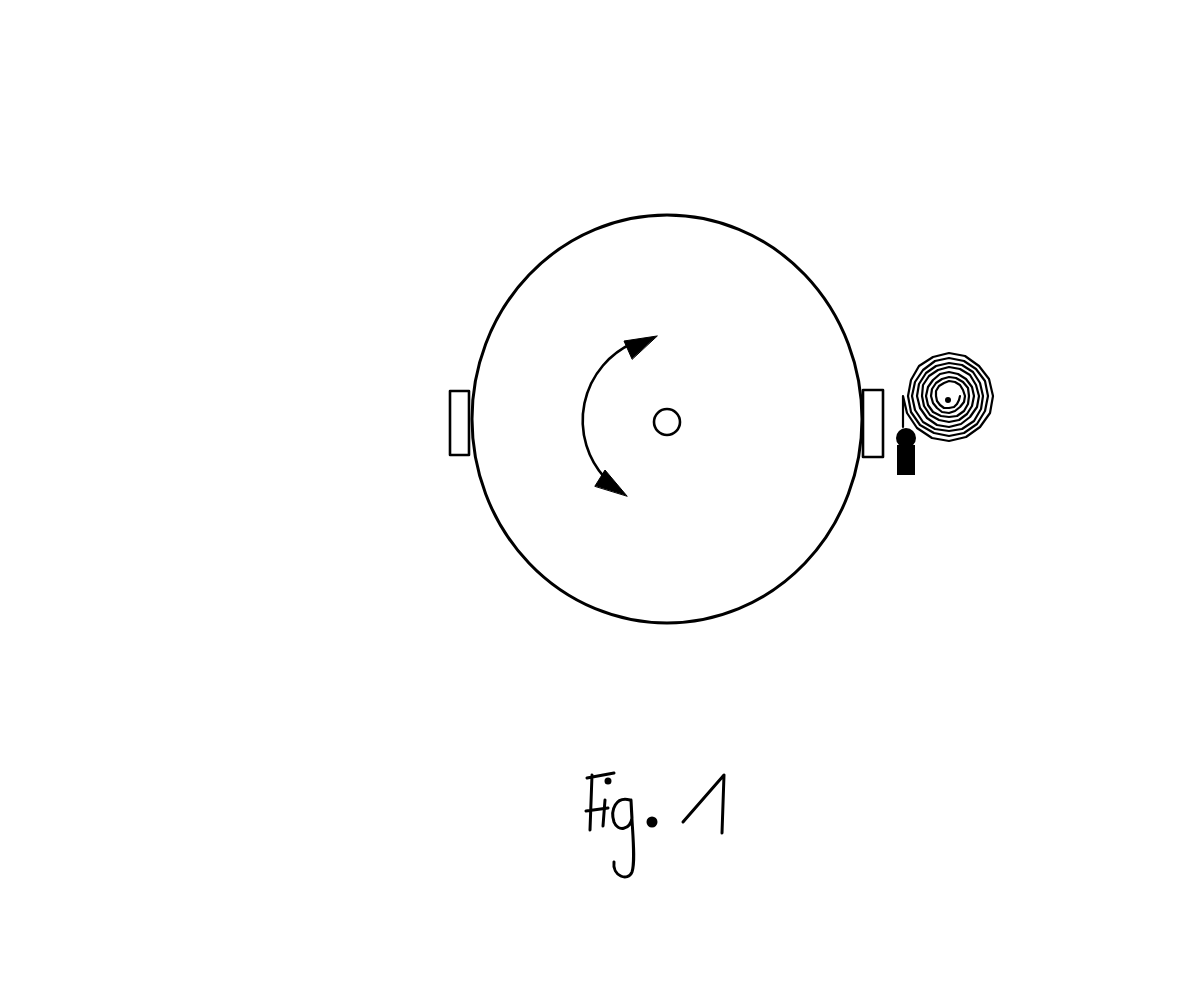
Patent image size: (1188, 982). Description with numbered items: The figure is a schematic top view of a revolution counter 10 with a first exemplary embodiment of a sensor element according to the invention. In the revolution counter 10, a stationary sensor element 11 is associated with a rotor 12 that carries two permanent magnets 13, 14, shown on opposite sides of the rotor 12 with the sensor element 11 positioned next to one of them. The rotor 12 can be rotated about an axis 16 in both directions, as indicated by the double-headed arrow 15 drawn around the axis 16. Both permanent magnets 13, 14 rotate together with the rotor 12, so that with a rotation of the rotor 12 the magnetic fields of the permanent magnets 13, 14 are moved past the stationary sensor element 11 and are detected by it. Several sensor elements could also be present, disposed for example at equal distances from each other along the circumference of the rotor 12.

The revolution counter 10 is at (340, 300).
The sensor element 11 is at (978, 384).
The rotor 12 is at (777, 287).
The permanent magnet 13 is at (380, 517).
The permanent magnet 14 is at (882, 558).
The arrow 15 is at (585, 400).
The axis 16 is at (669, 419).